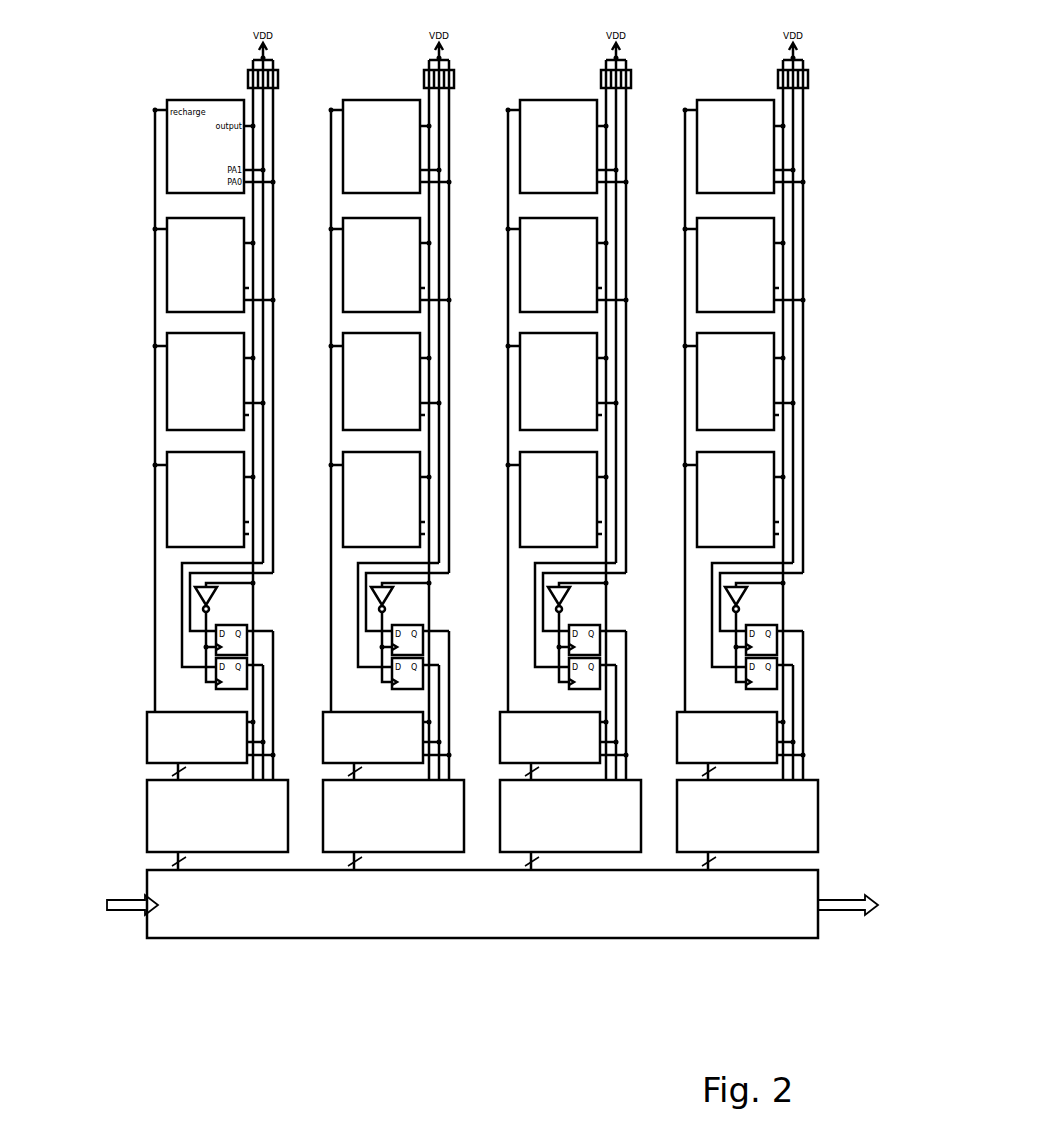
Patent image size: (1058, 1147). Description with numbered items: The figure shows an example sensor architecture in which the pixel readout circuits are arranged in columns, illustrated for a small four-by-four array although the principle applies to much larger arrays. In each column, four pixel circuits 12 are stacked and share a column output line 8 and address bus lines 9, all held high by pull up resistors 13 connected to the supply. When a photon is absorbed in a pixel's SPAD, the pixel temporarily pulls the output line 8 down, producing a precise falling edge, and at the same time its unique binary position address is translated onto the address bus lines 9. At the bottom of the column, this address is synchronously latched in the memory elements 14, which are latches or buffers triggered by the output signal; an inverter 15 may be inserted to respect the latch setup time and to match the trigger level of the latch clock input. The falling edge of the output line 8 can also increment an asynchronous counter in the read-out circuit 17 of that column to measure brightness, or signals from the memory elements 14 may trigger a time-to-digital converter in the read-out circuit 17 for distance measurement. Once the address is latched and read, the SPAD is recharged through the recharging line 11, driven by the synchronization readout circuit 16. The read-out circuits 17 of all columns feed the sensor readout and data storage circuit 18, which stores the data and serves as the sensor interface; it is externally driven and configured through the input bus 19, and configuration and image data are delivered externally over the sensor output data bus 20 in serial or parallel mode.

The output line 8 is at (823, 420).
The address bus lines 9 is at (828, 419).
The recharging line 11 is at (666, 411).
The pixel circuit 12 is at (735, 126).
The pull up resistors 13 is at (828, 57).
The memory elements 14 is at (813, 657).
The inverter 15 is at (802, 582).
The synchronization readout circuit 16 is at (778, 728).
The read-out circuits 17 is at (779, 810).
The sensor readout and data storage circuit 18 is at (482, 904).
The input bus 19 is at (109, 905).
The sensor output data bus 20 is at (865, 905).